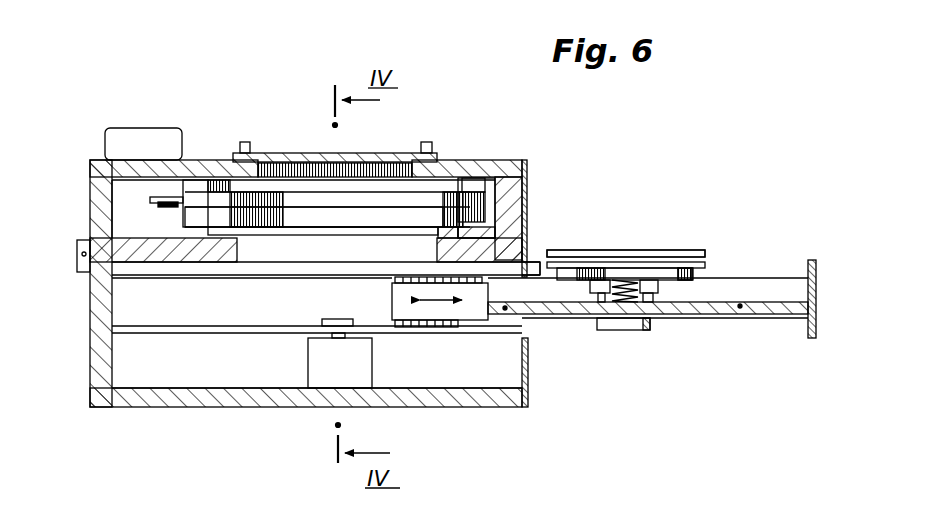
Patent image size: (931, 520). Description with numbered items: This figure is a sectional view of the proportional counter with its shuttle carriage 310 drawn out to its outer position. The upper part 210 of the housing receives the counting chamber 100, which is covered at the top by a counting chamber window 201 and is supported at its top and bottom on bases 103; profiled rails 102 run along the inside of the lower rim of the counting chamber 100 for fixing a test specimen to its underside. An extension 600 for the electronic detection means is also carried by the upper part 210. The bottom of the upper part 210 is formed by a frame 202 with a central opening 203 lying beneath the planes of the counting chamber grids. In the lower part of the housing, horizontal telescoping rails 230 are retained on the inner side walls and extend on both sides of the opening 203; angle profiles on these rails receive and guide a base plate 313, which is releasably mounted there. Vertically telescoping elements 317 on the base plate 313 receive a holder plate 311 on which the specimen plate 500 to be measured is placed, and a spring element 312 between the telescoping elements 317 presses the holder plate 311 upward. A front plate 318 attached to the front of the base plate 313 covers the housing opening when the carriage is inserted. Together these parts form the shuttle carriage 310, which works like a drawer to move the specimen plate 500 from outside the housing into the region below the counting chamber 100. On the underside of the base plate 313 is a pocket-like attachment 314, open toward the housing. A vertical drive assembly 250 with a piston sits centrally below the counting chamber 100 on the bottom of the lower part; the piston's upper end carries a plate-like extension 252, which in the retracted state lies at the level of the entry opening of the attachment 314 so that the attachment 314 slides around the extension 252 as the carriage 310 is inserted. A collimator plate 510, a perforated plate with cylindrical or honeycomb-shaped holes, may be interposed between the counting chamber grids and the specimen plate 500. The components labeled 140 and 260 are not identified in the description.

The counting chamber 100 is at (412, 201).
The profiled rails 102 is at (410, 225).
The bases 103 is at (470, 182).
The sensor 140 is at (165, 212).
The counting chamber window 201 is at (275, 165).
The frame 202 is at (143, 277).
The central opening 203 is at (238, 250).
The upper part 210 is at (207, 150).
The telescoping rail 230 is at (473, 314).
The vertical drive assembly 250 is at (356, 376).
The plate-like extension 252 is at (310, 332).
The plate end 260 is at (532, 267).
The shuttle carriage 310 is at (760, 223).
The holder plate 311 is at (687, 273).
The spring element 312 is at (630, 282).
The base plate 313 is at (730, 308).
The pocket-like attachment 314 is at (652, 330).
The vertically telescoping elements 317 is at (590, 285).
The front plate 318 is at (807, 329).
The specimen plate 500 is at (603, 268).
The collimator plate 510 is at (700, 250).
The extension 600 is at (137, 128).